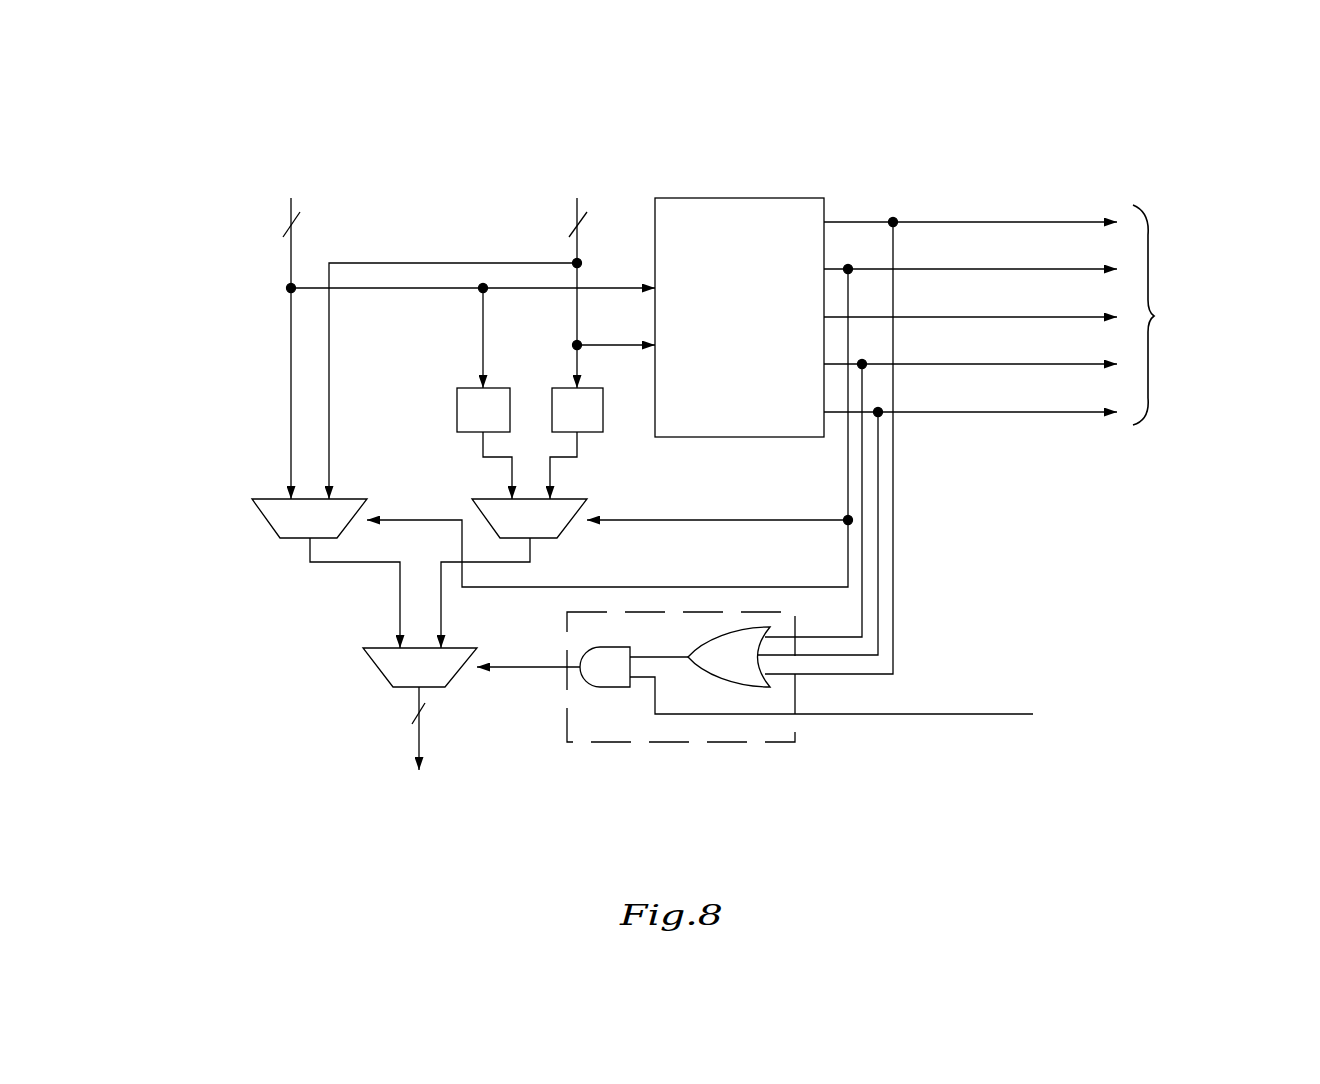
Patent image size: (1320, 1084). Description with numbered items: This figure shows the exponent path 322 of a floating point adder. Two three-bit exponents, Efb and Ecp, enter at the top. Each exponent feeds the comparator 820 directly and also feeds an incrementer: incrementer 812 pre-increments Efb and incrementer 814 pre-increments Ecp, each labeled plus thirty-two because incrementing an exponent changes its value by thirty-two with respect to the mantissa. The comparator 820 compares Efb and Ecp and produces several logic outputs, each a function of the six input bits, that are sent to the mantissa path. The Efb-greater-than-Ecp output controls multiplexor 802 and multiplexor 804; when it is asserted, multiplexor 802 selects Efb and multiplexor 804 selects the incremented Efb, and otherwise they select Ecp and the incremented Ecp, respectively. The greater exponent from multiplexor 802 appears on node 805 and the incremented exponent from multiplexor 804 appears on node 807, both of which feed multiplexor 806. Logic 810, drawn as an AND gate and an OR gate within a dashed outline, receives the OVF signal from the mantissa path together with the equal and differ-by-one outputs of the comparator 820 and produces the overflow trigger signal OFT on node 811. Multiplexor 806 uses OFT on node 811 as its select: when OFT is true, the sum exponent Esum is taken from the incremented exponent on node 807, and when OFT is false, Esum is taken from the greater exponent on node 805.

The exponent path 322 is at (197, 173).
The multiplexor 802 is at (272, 530).
The multiplexor 804 is at (563, 530).
The node 805 is at (400, 615).
The multiplexor 806 is at (455, 680).
The node 807 is at (440, 603).
The logic 810 is at (590, 742).
The node 811 is at (556, 670).
The incrementer 812 is at (457, 405).
The incrementer 814 is at (597, 432).
The comparator 820 is at (735, 198).